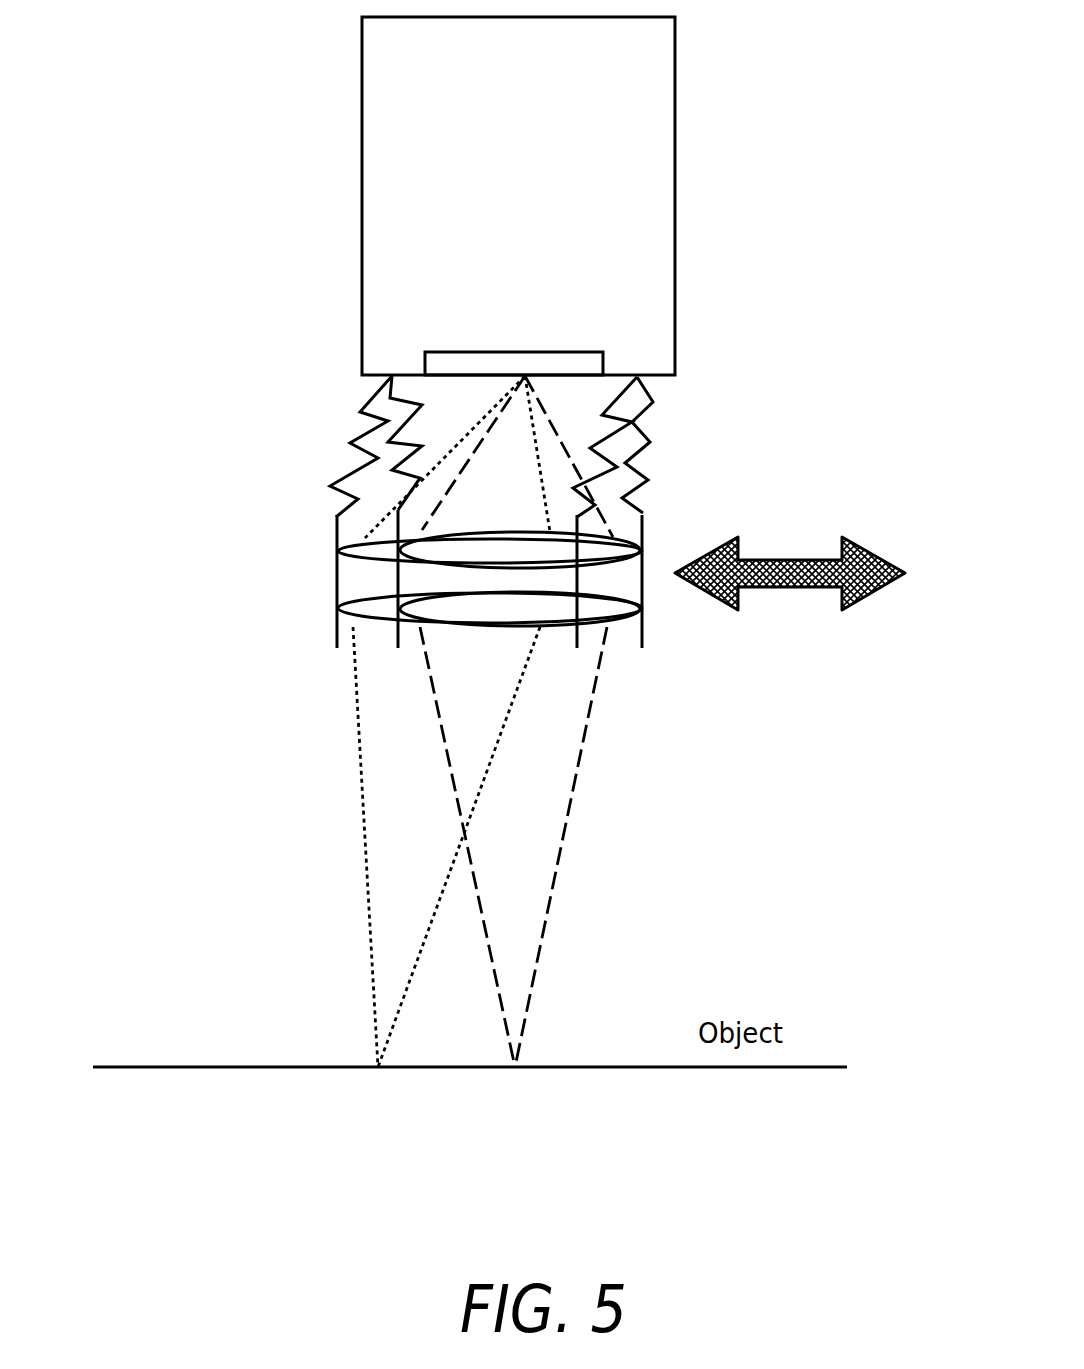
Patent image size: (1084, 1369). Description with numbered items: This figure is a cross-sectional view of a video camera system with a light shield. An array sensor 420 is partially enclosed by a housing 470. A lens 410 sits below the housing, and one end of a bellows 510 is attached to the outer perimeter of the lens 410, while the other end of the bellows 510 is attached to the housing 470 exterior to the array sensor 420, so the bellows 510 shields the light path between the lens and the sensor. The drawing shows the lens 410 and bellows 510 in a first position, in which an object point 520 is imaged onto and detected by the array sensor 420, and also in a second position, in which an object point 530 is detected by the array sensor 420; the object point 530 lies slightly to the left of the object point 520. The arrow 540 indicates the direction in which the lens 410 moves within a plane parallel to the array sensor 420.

The housing 470 is at (518, 196).
The array sensor 420 is at (518, 348).
The bellows 510 is at (653, 413).
The lens 410 is at (413, 583).
The arrow 540 is at (788, 588).
The object point 530 is at (450, 742).
The object point 520 is at (516, 742).